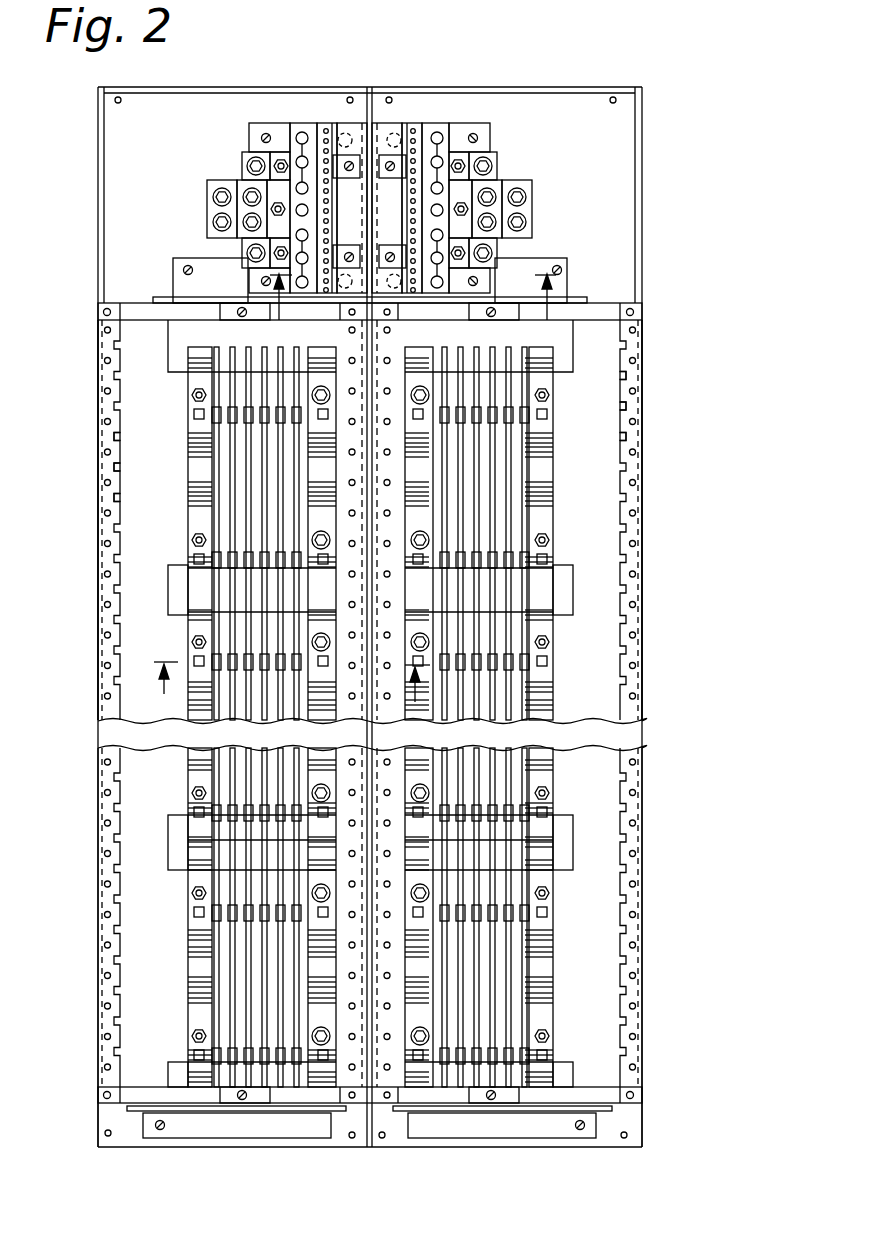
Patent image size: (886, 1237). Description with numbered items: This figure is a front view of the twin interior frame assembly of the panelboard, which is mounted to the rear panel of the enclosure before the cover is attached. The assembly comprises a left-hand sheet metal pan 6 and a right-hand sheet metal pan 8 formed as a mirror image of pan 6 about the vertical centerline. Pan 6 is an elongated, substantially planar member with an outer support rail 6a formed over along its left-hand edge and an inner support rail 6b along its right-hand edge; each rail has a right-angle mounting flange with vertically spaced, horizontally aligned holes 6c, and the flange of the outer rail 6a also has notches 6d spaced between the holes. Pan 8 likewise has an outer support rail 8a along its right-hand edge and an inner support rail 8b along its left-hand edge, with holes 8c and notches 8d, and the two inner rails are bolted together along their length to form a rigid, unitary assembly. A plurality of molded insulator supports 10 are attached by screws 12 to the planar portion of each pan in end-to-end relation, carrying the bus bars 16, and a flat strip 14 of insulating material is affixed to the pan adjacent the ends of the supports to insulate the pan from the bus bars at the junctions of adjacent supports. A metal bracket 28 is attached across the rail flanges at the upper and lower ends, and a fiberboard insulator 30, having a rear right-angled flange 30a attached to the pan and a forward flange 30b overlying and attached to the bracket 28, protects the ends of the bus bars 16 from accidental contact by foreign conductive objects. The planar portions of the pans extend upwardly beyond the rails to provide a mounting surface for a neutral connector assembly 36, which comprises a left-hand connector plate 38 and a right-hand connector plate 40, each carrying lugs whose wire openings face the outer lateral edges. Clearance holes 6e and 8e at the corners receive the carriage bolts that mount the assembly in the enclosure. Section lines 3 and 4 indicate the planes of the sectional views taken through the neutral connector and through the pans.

The section line 3- 3 is at (406, 311).
The section line 4- 4 is at (283, 709).
The left-hand sheet metal pan 6 is at (117, 382).
The outer support rail 6a is at (106, 628).
The inner support rail 6b is at (355, 1078).
The holes 6c is at (350, 362).
The notches 6d is at (118, 492).
The clearance holes 6e is at (115, 100).
The right-hand sheet metal pan 8 is at (607, 362).
The outer support rail 8a is at (640, 592).
The inner support rail 8b is at (378, 1078).
The holes 8c is at (390, 348).
The notches 8d is at (655, 405).
The clearance holes 8e is at (391, 97).
The insulator support 10 is at (195, 470).
The screws 12 is at (196, 398).
The flat strip 14 is at (185, 342).
The bus bars 16 is at (268, 1086).
The metal bracket 28 is at (165, 318).
The fiberboard insulator 30 is at (152, 300).
The rear right-angled flange 30a is at (172, 290).
The forward flange 30b is at (232, 300).
The neutral connector assembly 36 is at (290, 100).
The left-hand connector plate 38 is at (353, 132).
The right-hand connector plate 40 is at (383, 128).